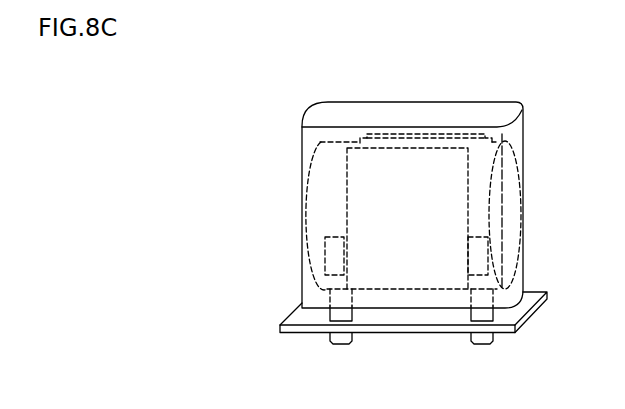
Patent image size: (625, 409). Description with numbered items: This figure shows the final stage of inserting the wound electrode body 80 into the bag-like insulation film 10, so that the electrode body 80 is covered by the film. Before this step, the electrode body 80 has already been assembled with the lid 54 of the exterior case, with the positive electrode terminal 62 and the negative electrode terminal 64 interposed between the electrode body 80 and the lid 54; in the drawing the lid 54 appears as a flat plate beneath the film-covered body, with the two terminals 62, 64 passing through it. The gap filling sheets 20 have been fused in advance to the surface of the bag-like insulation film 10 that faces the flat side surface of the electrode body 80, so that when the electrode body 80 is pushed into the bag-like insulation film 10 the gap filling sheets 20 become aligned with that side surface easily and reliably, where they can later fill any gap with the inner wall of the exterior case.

The bag-like insulation film 10 is at (504, 105).
The gap filling sheet 20 is at (373, 137).
The electrode body 80 is at (518, 160).
The lid 54 is at (503, 333).
The positive electrode terminal 62 is at (338, 345).
The negative electrode terminal 64 is at (481, 345).